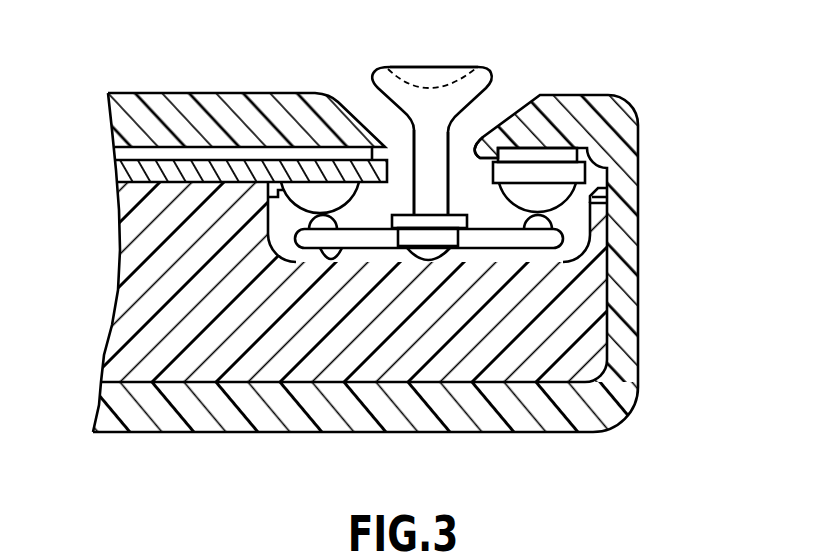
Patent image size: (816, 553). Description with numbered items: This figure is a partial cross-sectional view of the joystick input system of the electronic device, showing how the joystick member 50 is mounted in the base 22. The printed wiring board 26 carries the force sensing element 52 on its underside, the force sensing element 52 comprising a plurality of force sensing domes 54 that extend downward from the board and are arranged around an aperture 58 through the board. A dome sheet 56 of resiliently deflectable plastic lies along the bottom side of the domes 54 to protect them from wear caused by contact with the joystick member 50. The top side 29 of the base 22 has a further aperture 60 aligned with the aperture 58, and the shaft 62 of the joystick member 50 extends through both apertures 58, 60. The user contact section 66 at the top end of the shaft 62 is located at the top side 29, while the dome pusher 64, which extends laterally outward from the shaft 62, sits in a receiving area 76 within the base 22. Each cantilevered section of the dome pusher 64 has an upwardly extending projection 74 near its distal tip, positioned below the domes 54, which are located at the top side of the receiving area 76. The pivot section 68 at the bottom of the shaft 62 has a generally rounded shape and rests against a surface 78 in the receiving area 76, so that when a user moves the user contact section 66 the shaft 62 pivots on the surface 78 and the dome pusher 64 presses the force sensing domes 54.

The base 22 is at (152, 432).
The printed wiring board 26 is at (120, 176).
The top side 29 is at (140, 92).
The joystick member 50 is at (465, 66).
The force sensing element 52 is at (542, 193).
The force sensing domes 54 is at (330, 210).
The dome sheet 56 is at (296, 192).
The aperture 58 is at (478, 137).
The aperture 60 is at (397, 138).
The shaft 62 is at (430, 117).
The dome pusher 64 is at (394, 247).
The user contact section 66 is at (443, 65).
The pivot section 68 is at (450, 249).
The upwardly extending projection 74 is at (560, 231).
The receiving area 76 is at (283, 230).
The surface 78 is at (336, 258).